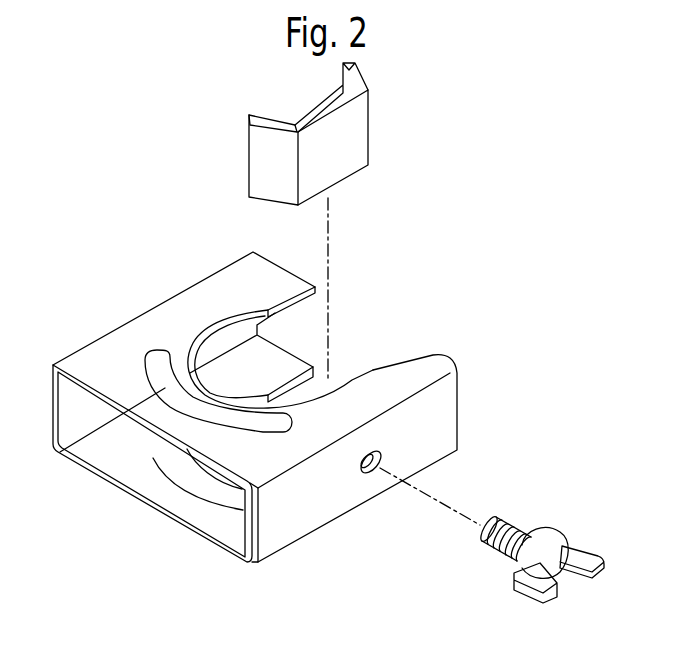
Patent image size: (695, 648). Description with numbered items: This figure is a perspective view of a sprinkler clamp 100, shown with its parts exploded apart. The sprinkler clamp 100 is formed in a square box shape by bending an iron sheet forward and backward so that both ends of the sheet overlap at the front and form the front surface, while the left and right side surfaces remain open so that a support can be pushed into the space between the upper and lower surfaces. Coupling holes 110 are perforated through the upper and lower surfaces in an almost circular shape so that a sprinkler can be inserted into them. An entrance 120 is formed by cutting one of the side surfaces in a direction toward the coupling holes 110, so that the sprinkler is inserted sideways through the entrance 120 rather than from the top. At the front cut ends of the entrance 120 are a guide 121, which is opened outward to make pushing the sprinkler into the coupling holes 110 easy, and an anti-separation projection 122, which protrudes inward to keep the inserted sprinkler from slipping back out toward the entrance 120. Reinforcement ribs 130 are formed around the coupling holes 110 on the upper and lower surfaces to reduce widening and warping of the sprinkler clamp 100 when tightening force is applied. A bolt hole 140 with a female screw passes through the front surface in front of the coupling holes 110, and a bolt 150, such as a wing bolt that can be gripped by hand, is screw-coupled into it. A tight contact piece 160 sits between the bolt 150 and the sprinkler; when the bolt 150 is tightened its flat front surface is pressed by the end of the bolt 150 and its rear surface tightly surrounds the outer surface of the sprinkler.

The sprinkler clamp 100 is at (192, 272).
The coupling holes 110 is at (197, 333).
The entrance 120 is at (365, 335).
The guide 121 is at (413, 358).
The anti-separation projection 122 is at (282, 298).
The reinforcement ribs 130 is at (172, 380).
The bolt hole 140 is at (380, 473).
The bolt 150 is at (518, 530).
The tight contact piece 160 is at (355, 130).